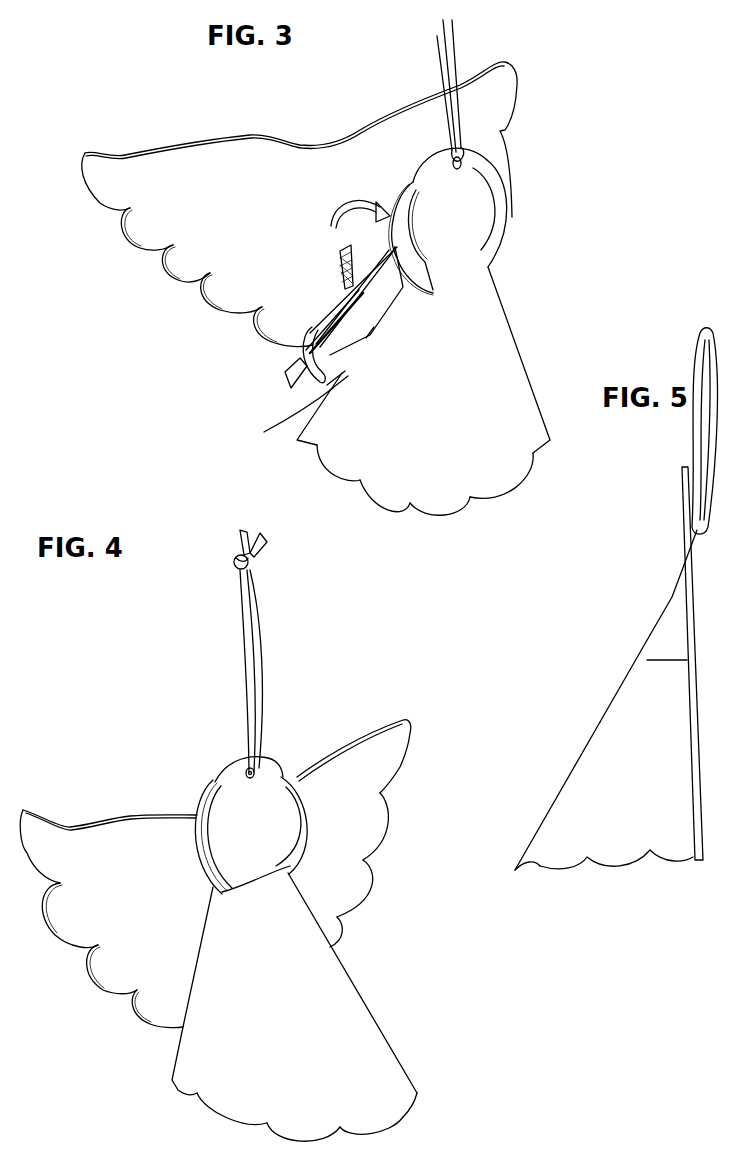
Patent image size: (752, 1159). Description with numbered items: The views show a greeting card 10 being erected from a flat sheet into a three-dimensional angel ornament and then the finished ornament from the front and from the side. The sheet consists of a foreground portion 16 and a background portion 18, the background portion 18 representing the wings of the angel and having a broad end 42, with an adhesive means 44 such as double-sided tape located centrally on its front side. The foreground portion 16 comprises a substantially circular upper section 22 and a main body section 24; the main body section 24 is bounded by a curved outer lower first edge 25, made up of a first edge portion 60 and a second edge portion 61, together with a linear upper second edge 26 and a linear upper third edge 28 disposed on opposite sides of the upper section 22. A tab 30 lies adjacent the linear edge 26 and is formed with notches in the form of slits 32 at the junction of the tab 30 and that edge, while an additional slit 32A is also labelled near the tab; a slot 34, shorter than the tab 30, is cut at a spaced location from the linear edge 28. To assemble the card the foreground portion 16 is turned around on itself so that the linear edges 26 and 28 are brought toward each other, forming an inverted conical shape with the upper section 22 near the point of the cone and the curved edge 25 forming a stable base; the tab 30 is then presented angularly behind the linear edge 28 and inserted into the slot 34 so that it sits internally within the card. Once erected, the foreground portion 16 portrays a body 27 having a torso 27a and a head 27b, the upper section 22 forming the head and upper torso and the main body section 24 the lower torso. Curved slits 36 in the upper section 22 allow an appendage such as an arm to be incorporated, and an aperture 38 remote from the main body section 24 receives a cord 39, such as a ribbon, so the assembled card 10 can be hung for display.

In FIG. 3, the greeting card 10 is at (134, 94).
In FIG. 4, the greeting card 10 is at (81, 729).
In FIG. 5, the greeting card 10 is at (621, 622).
In FIG. 3, the foreground portion 16 is at (403, 485).
In FIG. 4, the foreground portion 16 is at (220, 1097).
In FIG. 5, the foreground portion 16 is at (608, 753).
In FIG. 3, the background portion 18 is at (213, 172).
In FIG. 4, the background portion 18 is at (115, 847).
In FIG. 5, the background portion 18 is at (698, 643).
In FIG. 3, the upper section 22 is at (472, 202).
In FIG. 4, the upper section 22 is at (255, 830).
In FIG. 5, the upper section 22 is at (670, 596).
In FIG. 3, the main body section 24 is at (493, 370).
In FIG. 4, the main body section 24 is at (340, 1024).
In FIG. 5, the main body section 24 is at (618, 735).
In FIG. 3, the curved outer lower first edge 25 is at (475, 499).
In FIG. 4, the curved outer lower first edge 25 is at (405, 1118).
In FIG. 5, the curved outer lower first edge 25 is at (538, 867).
In FIG. 3, the linear upper second edge 26 is at (390, 310).
In FIG. 4, the body 27 is at (330, 995).
In FIG. 5, the body 27 is at (647, 687).
In FIG. 4, the torso 27a is at (370, 1068).
In FIG. 5, the torso 27a is at (573, 803).
In FIG. 4, the head 27b is at (270, 805).
In FIG. 5, the head 27b is at (682, 572).
In FIG. 3, the linear upper third edge 28 is at (372, 288).
In FIG. 3, the tab 30 is at (350, 353).
In FIG. 3, the slits 32 is at (370, 334).
In FIG. 3, the slot tab 32A is at (336, 388).
In FIG. 3, the slot 34 is at (330, 323).
In FIG. 3, the curved slits 36 is at (421, 188).
In FIG. 4, the curved slits 36 is at (215, 820).
In FIG. 3, the aperture 38 is at (459, 163).
In FIG. 4, the aperture 38 is at (247, 770).
In FIG. 3, the cord 39 is at (436, 72).
In FIG. 4, the cord 39 is at (263, 663).
In FIG. 5, the cord 39 is at (704, 431).
In FIG. 3, the broad end 42 is at (298, 143).
In FIG. 4, the broad end 42 is at (343, 755).
In FIG. 3, the adhesive means 44 is at (340, 252).
In FIG. 3, the first edge portion 60 is at (288, 422).
In FIG. 3, the second edge portion 61 is at (317, 463).